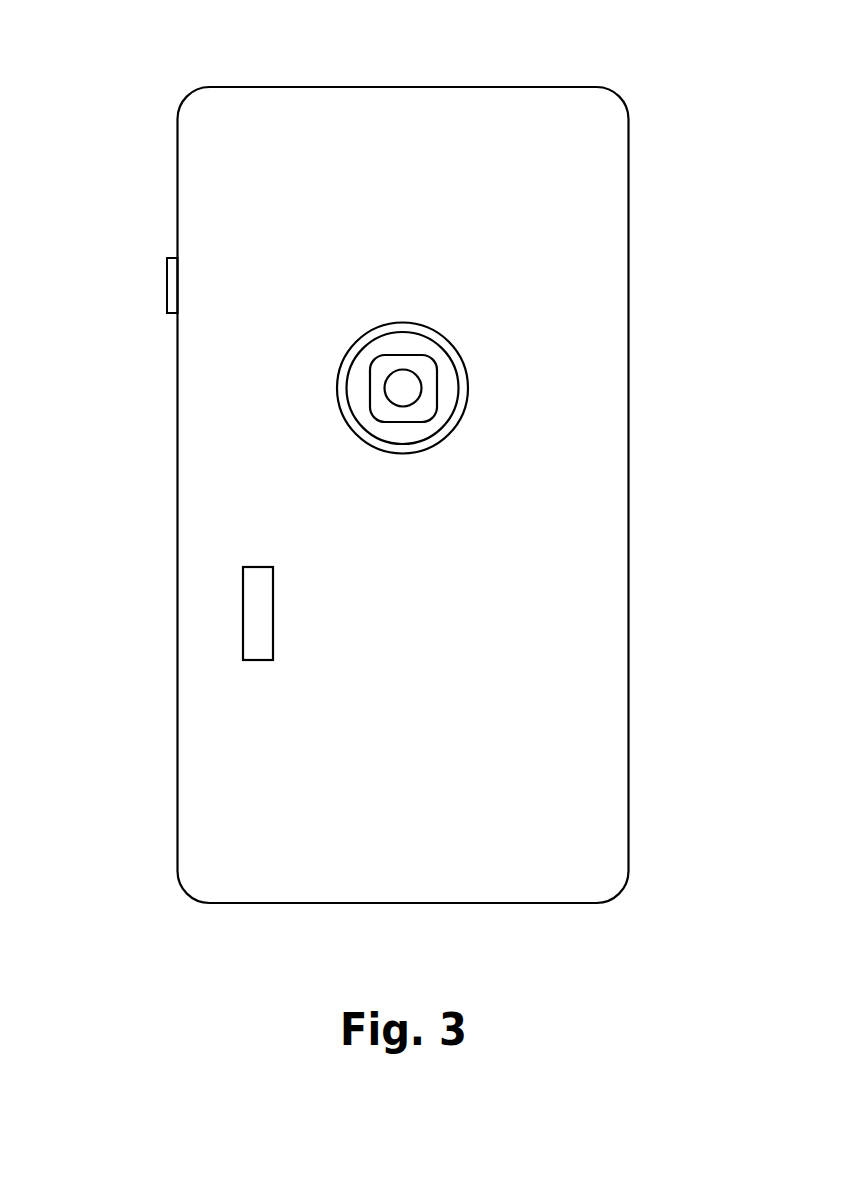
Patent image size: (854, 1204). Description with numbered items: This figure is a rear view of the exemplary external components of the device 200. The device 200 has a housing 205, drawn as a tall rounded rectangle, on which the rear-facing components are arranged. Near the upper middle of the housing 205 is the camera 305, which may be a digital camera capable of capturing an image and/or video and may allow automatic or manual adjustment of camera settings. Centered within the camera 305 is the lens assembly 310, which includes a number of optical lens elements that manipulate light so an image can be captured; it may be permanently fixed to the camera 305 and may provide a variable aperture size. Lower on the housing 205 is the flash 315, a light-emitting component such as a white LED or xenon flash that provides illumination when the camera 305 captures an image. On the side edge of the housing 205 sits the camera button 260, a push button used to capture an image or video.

The device 200 is at (160, 38).
The housing 205 is at (609, 594).
The camera button 260 is at (167, 289).
The camera 305 is at (445, 411).
The lens assembly 310 is at (422, 386).
The flash 315 is at (243, 612).